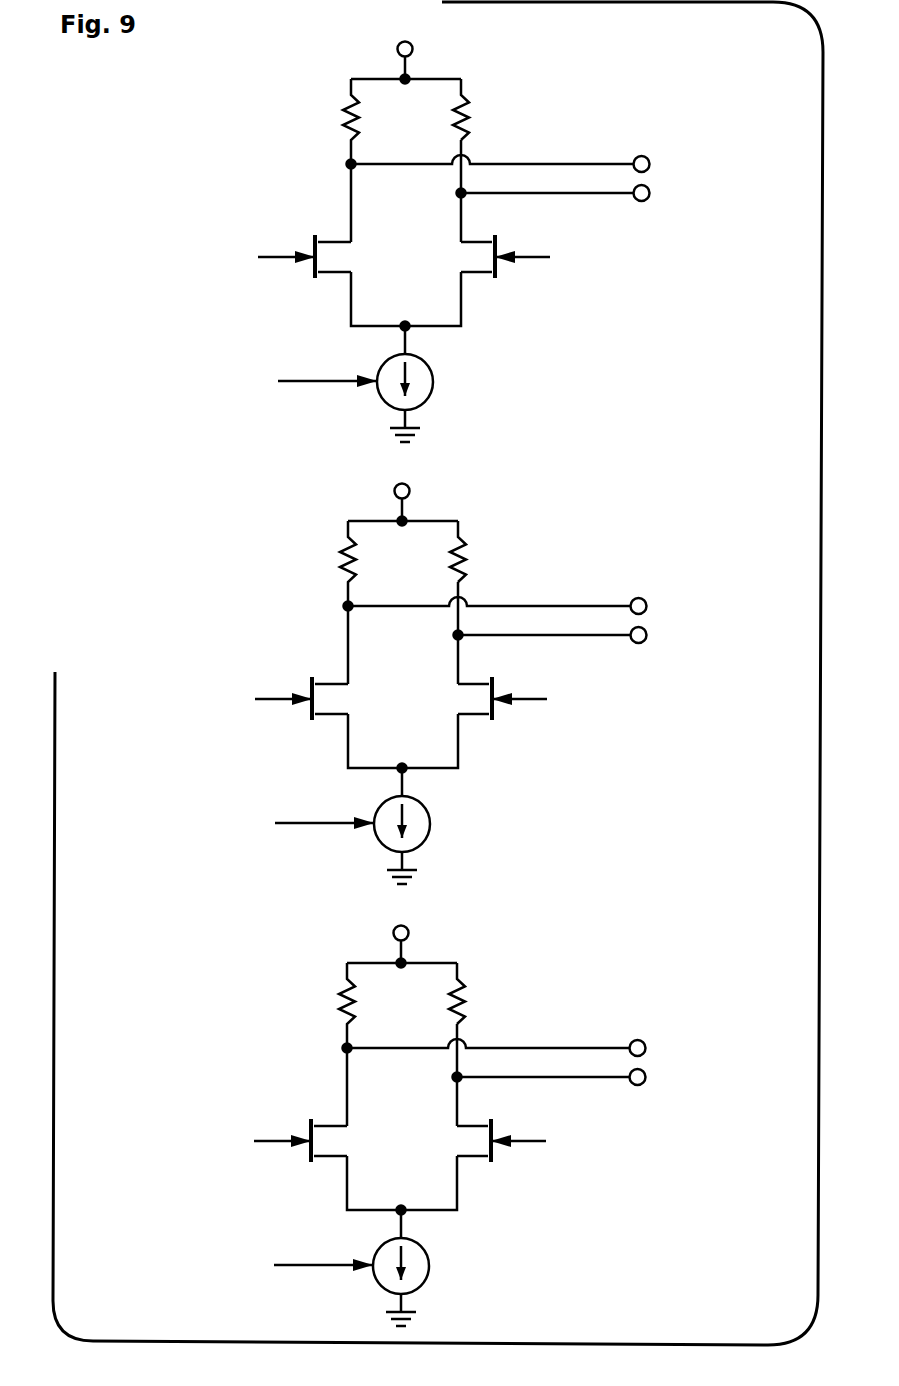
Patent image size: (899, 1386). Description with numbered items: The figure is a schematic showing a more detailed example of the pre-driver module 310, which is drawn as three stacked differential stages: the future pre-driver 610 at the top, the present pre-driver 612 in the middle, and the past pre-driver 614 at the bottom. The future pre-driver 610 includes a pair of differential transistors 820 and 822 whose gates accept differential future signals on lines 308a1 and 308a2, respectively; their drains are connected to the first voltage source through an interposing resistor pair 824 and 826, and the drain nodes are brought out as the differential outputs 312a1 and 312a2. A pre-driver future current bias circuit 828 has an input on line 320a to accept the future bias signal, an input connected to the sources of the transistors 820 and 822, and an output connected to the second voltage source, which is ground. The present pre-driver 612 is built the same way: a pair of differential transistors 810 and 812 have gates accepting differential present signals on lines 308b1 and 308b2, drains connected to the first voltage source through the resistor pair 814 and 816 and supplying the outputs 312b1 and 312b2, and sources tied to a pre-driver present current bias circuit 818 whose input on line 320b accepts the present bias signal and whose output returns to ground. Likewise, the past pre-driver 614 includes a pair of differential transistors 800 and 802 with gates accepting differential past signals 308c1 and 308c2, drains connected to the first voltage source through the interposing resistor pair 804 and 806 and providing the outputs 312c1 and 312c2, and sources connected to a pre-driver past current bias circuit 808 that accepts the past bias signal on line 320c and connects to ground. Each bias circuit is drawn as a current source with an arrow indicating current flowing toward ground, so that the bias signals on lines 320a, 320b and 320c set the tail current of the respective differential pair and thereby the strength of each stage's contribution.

The pre-driver module 310 is at (438, 673).
The future pre-driver 610 is at (450, 228).
The present pre-driver 612 is at (447, 670).
The past pre-driver 614 is at (446, 1112).
The resistor 824 is at (311, 115).
The resistor 826 is at (500, 121).
The differential transistor 820 is at (358, 239).
The differential transistor 822 is at (448, 277).
The pre-driver future current bias circuit 828 is at (445, 382).
The line 320a is at (319, 374).
The line 308a1 is at (276, 229).
The line 308a2 is at (517, 229).
The differential output 312a1 is at (505, 139).
The differential output 312a2 is at (560, 221).
The load resistor 814 is at (308, 557).
The load resistor 816 is at (497, 563).
The differential transistor 810 is at (355, 681).
The differential transistor 812 is at (445, 719).
The current source 818 is at (442, 824).
The line 320b is at (316, 816).
The line 308b1 is at (273, 671).
The line 308b2 is at (514, 671).
The differential output 312b1 is at (502, 581).
The differential output 312b2 is at (557, 663).
The resistor 804 is at (307, 999).
The resistor 806 is at (496, 1005).
The differential transistor 800 is at (354, 1123).
The differential transistor 802 is at (444, 1161).
The pre-driver past current bias circuit 808 is at (441, 1266).
The line 320c is at (315, 1258).
The differential past signal 308c1 is at (272, 1113).
The differential past signal 308c2 is at (513, 1113).
The differential output 312c1 is at (501, 1023).
The differential output 312c2 is at (556, 1105).